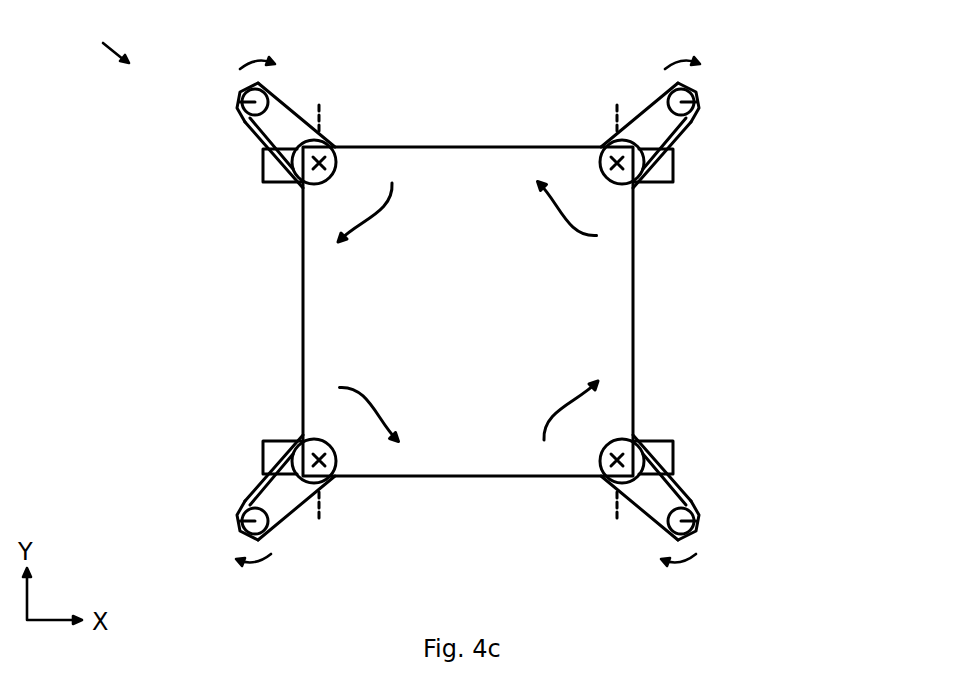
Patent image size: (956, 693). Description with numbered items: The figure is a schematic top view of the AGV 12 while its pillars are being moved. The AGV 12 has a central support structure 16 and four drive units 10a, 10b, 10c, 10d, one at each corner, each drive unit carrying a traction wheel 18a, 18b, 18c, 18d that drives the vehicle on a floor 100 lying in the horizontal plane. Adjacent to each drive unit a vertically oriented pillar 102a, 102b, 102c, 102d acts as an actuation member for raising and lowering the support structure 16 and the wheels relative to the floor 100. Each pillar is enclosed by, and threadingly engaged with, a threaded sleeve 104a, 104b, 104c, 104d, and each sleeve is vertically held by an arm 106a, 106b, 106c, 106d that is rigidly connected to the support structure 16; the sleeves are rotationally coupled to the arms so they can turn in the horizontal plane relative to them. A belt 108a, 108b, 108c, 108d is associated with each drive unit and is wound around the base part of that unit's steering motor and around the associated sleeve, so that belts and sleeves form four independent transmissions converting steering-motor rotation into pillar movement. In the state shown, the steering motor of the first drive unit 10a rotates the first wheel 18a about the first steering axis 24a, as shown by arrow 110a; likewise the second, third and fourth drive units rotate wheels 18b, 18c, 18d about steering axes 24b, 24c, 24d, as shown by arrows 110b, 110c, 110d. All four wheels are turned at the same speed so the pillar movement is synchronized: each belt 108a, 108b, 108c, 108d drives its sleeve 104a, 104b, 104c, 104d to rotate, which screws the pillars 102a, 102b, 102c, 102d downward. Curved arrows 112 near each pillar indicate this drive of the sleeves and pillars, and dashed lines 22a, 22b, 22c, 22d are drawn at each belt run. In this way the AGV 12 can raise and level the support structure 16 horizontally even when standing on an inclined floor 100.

The floor 100 is at (475, 314).
The AGV 12 is at (102, 41).
The support structure 16 is at (483, 305).
The first drive unit 10a is at (280, 521).
The second drive unit 10b is at (281, 104).
The third drive unit 10c is at (656, 104).
The fourth drive unit 10d is at (658, 521).
The first wheel 18a is at (243, 437).
The second wheel 18b is at (267, 166).
The third wheel 18c is at (695, 187).
The fourth wheel 18d is at (696, 437).
The pivot axis 22a is at (364, 512).
The pivot axis 22b is at (322, 124).
The pivot axis 22c is at (573, 115).
The pivot axis 22d is at (573, 511).
The first steering axis 24a is at (294, 433).
The second steering axis 24b is at (300, 182).
The third steering axis 24c is at (643, 193).
The fourth steering axis 24d is at (644, 433).
The first pillar 102a is at (208, 540).
The second pillar 102b is at (248, 89).
The third pillar 102c is at (728, 85).
The fourth pillar 102d is at (731, 540).
The first threaded sleeve 104a is at (201, 520).
The second threaded sleeve 104b is at (243, 114).
The third threaded sleeve 104c is at (735, 104).
The fourth threaded sleeve 104d is at (737, 520).
The first arm 106a is at (227, 470).
The second arm 106b is at (284, 130).
The third arm 106c is at (707, 153).
The fourth arm 106d is at (711, 470).
The first belt 108a is at (337, 520).
The second belt 108b is at (295, 112).
The third belt 108c is at (599, 105).
The fourth belt 108d is at (599, 520).
The arrow 110a is at (392, 414).
The arrow 110b is at (391, 216).
The arrow 110c is at (546, 216).
The arrow 110d is at (546, 410).
The wheel rotation direction 112 is at (471, 313).